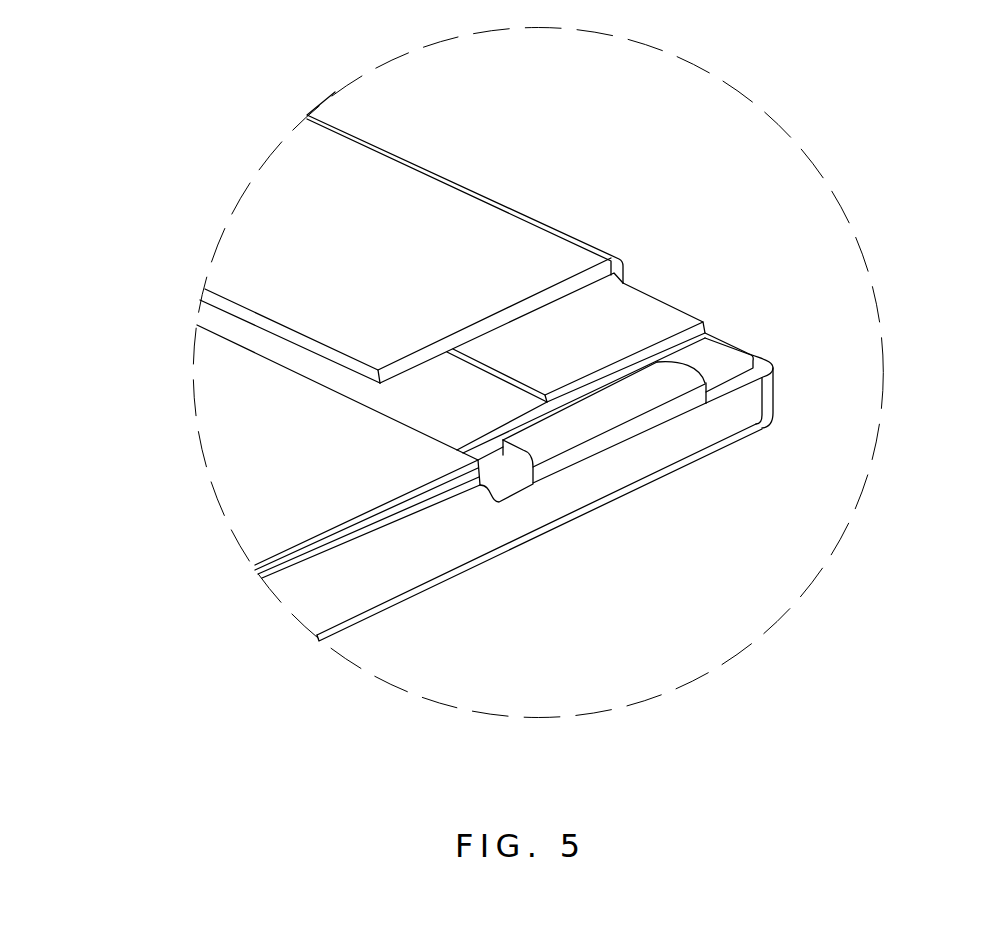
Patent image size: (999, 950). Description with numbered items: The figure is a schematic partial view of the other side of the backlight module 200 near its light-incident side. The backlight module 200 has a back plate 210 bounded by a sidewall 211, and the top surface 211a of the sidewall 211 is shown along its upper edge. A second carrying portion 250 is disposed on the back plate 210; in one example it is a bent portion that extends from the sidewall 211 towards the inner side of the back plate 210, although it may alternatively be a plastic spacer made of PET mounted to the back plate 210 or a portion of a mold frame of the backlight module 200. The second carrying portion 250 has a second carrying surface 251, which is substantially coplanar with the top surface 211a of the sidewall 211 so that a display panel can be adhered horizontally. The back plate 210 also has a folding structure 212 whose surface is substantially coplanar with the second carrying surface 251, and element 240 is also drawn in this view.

The backlight module 200 is at (508, 567).
The back plate 210 is at (530, 507).
The sidewall 211 is at (318, 597).
The top surface 211a is at (353, 540).
The folding structure 212 is at (452, 202).
The support plate 240 is at (238, 437).
The second carrying portion 250 is at (667, 398).
The second carrying surface 251 is at (580, 410).